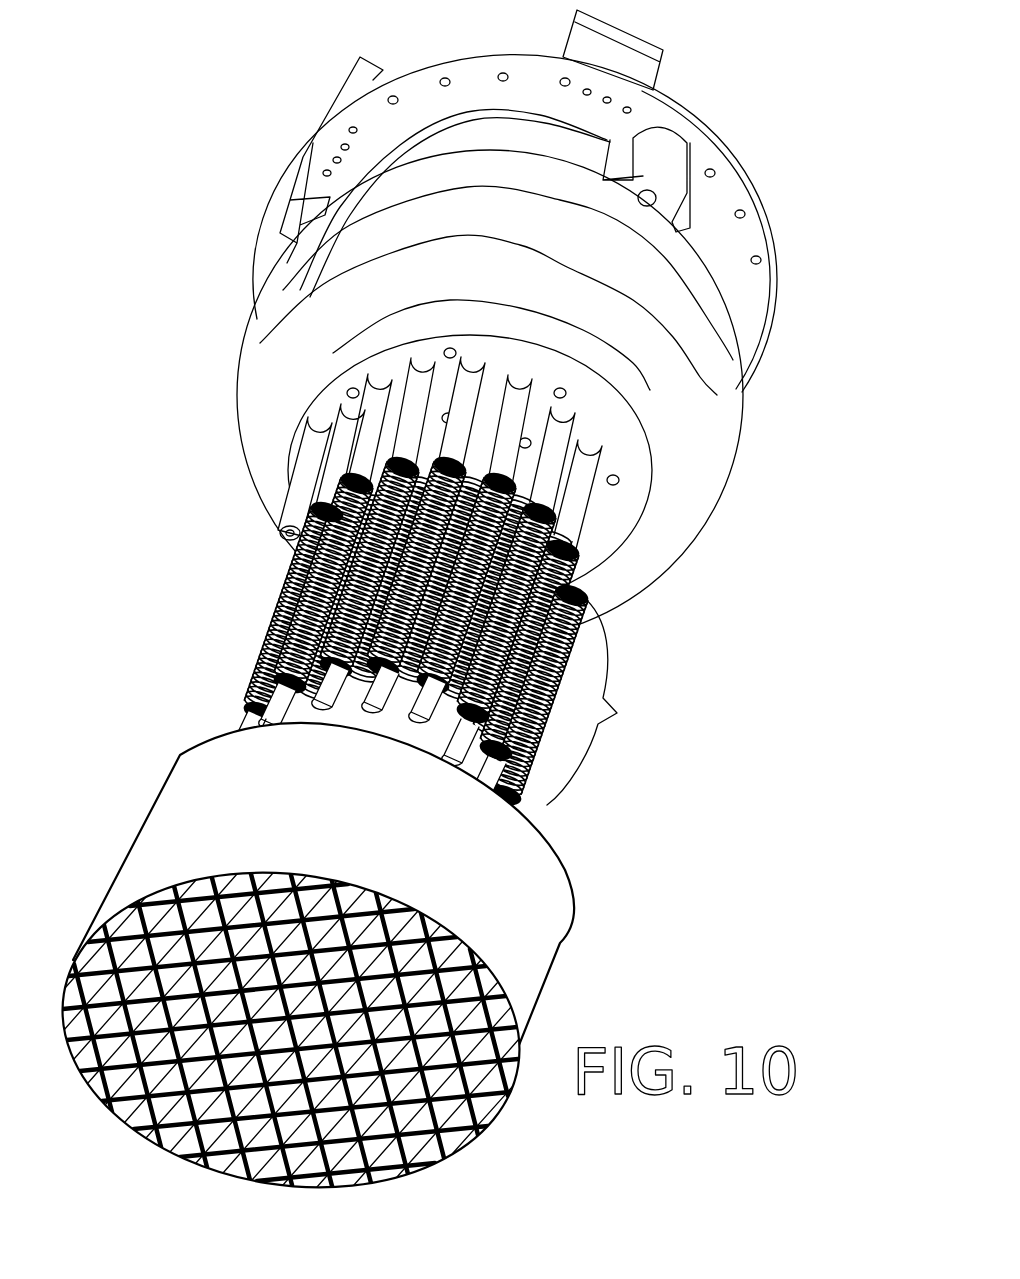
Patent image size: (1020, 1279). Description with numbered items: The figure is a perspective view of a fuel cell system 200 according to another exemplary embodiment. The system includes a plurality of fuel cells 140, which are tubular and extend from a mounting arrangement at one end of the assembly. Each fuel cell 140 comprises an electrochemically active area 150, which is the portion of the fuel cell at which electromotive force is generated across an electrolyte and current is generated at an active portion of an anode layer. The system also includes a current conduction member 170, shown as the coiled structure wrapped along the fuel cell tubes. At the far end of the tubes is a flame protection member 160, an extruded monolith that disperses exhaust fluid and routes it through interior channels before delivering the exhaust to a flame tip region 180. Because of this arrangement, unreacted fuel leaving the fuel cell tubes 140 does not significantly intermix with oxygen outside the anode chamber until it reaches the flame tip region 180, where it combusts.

The fuel cell system 200 is at (727, 110).
The flame tip region 180 is at (743, 390).
The fuel cells 140 is at (283, 517).
The current conduction member 170 is at (262, 660).
The electrochemically active area 150 is at (454, 700).
The flame protection member 160 is at (578, 882).